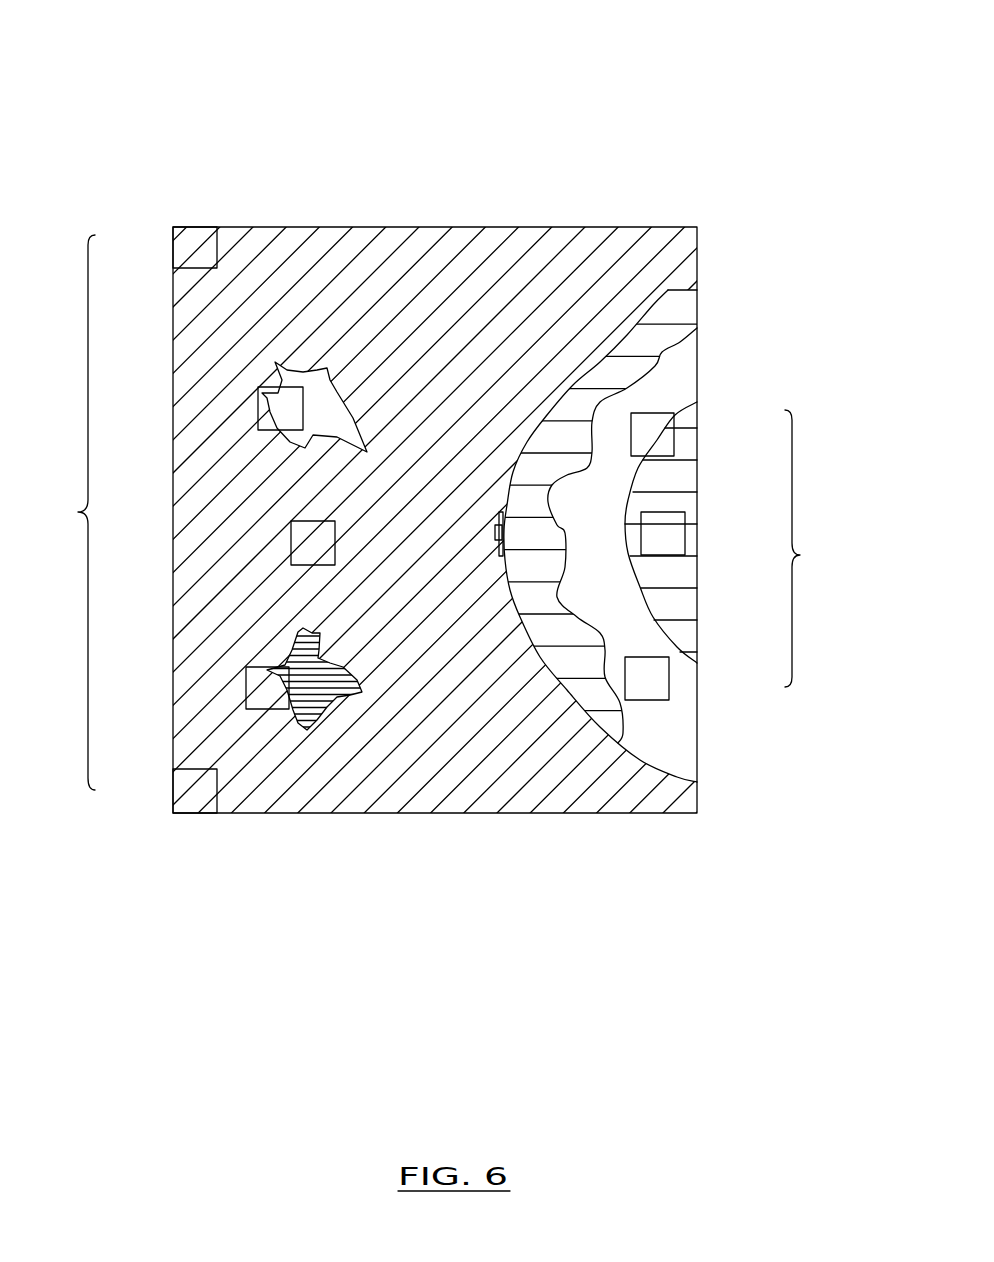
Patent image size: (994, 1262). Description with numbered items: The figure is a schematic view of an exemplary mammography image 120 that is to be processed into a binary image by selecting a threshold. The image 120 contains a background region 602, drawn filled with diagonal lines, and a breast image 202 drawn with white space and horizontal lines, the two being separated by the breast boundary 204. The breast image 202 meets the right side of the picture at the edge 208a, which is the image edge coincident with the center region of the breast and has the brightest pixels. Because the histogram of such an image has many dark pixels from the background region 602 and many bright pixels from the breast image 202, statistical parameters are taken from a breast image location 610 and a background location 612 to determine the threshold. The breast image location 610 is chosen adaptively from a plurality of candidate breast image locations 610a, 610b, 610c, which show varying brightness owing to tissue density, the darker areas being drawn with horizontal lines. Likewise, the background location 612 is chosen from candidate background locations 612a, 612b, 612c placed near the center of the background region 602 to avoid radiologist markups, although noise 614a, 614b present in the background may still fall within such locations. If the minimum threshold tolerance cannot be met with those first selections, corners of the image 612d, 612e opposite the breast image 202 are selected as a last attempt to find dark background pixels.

The image 120 is at (587, 69).
The background region 602 is at (260, 256).
The breast boundary 204 is at (668, 290).
The breast image 202 is at (673, 378).
The edge coincident with the center region of the breast 208a is at (697, 745).
The noise 614a is at (315, 368).
The noise 614b is at (318, 705).
The background location 612 is at (88, 587).
The background location 612a is at (246, 690).
The background location 612b is at (291, 544).
The background location 612c is at (258, 400).
The corner of the image 612d is at (198, 770).
The corner of the image 612e is at (193, 270).
The breast image location 610 is at (792, 600).
The breast image location 610a is at (676, 446).
The breast image location 610b is at (685, 534).
The breast image location 610c is at (670, 678).